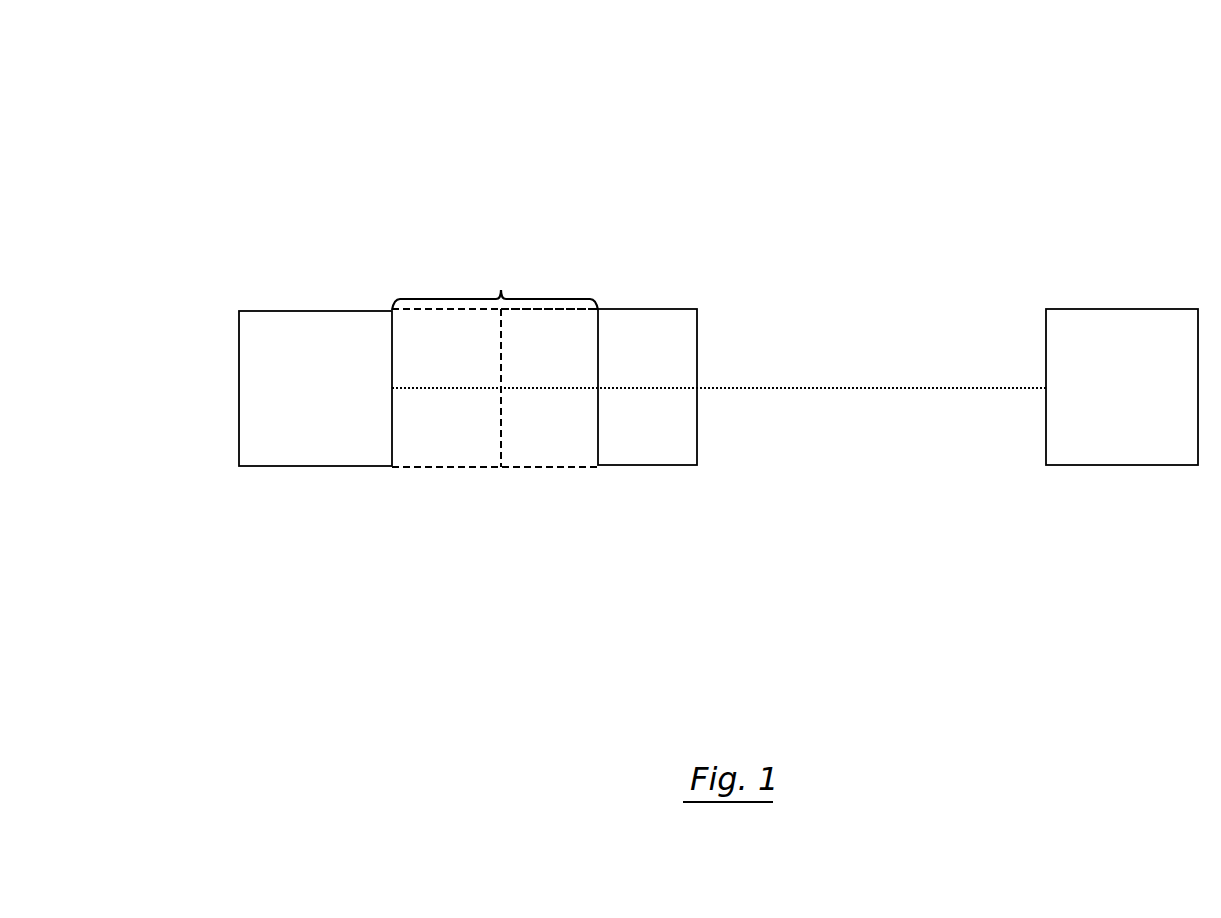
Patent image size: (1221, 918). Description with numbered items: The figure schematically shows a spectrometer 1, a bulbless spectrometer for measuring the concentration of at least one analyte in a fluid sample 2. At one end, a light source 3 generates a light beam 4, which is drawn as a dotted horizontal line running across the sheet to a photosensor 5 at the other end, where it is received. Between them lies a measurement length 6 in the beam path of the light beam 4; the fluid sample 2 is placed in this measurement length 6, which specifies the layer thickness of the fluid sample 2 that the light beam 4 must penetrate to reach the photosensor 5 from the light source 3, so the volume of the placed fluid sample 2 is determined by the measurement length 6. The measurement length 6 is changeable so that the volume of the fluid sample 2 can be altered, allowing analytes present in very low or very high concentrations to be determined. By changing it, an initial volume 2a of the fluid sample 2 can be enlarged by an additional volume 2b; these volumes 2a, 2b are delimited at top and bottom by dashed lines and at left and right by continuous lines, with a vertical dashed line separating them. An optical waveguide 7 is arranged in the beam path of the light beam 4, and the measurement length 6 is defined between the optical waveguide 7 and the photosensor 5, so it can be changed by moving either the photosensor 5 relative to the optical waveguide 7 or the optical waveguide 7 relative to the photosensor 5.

The spectrometer 1 is at (256, 107).
The fluid sample 2 is at (445, 467).
The initial volume 2a is at (448, 340).
The additional volume 2b is at (555, 335).
The light source 3 is at (1119, 443).
The light beam 4 is at (897, 388).
The photosensor 5 is at (280, 447).
The measurement length 6 is at (495, 282).
The optical waveguide 7 is at (650, 450).